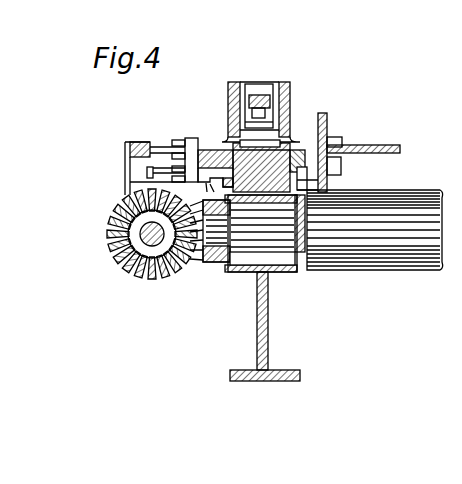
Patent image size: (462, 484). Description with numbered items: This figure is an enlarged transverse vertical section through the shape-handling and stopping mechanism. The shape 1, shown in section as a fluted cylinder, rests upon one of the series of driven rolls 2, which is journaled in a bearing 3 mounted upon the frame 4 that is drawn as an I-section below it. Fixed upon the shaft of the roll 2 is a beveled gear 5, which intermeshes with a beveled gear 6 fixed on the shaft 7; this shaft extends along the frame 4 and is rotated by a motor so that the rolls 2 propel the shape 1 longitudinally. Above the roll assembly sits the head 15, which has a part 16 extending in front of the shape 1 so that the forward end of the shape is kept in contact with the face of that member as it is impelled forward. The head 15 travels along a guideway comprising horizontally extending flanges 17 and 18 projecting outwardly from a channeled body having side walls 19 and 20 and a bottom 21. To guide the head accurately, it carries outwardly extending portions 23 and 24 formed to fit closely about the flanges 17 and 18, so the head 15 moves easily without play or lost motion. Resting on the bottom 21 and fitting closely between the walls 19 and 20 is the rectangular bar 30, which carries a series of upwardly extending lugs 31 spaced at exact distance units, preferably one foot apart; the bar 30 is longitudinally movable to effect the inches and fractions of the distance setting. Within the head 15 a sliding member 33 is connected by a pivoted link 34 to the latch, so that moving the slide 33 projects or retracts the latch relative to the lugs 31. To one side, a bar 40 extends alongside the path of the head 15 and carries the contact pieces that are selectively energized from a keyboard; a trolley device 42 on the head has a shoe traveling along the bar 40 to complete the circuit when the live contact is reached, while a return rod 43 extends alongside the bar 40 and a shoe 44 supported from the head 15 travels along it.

The rod 1 is at (365, 147).
The driven rolls 2 is at (366, 268).
The bearings 3 is at (237, 250).
The frame 4 is at (270, 320).
The beveled gears 5 is at (203, 262).
The beveled gears 6 is at (118, 209).
The shaft 7 is at (143, 235).
The head 15 is at (232, 84).
The part 16 is at (342, 137).
The flange 17 is at (218, 148).
The guideway flange 18 is at (327, 135).
The side wall 19 is at (215, 192).
The side wall 20 is at (341, 176).
The bottom 21 is at (327, 190).
The outwardly extending portion 23 is at (202, 140).
The outwardly extending portion 24 is at (292, 140).
The bar 30 is at (224, 138).
The lugs 31 is at (237, 137).
The sliding member 33 is at (261, 99).
The pivoted link 34 is at (270, 110).
The bar 40 is at (125, 143).
The trolley device 42 is at (150, 142).
The return rod 43 is at (147, 170).
The shoe 44 is at (165, 178).